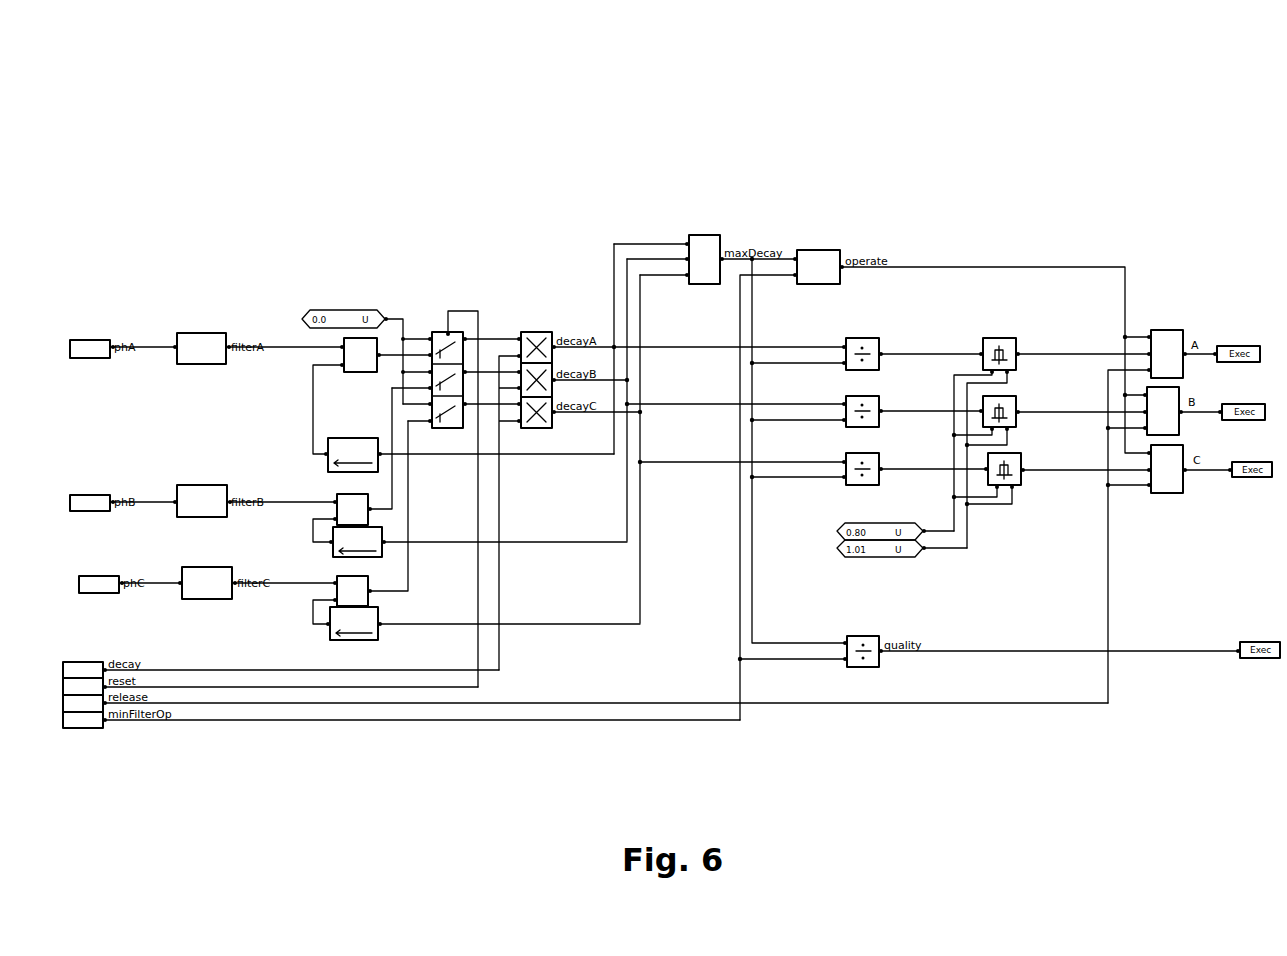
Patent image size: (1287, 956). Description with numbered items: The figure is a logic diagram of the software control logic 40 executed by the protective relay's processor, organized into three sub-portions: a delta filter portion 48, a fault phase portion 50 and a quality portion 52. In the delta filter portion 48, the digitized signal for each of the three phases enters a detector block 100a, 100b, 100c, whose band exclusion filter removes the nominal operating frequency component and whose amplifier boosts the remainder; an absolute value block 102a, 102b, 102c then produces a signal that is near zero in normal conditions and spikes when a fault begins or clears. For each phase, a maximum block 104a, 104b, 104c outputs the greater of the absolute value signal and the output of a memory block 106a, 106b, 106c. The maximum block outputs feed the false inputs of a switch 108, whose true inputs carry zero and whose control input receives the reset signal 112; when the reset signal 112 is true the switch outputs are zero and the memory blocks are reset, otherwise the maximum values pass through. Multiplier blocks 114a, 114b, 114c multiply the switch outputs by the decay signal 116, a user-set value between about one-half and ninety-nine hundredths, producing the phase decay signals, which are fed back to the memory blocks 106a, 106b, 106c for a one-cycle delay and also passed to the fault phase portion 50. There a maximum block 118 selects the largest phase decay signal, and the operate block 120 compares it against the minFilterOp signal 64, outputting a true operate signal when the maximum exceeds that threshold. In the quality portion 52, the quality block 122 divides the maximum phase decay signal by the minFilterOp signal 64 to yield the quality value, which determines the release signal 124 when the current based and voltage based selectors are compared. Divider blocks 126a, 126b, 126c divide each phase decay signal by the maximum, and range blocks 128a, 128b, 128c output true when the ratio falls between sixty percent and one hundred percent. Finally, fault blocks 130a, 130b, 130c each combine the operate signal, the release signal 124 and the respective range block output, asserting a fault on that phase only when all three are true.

The control logic 40 is at (604, 110).
The delta filter portion 48 is at (285, 252).
The fault phase portion 50 is at (918, 245).
The quality portion 52 is at (857, 705).
The minFilterOp signal 64 is at (82, 730).
The detector block 100a is at (82, 340).
The detector block 100b is at (82, 495).
The detector block 100c is at (88, 576).
The absolute value block 102a is at (195, 333).
The absolute value block 102b is at (195, 485).
The absolute value block 102c is at (200, 567).
The maximum block 104a is at (362, 338).
The maximum block 104b is at (340, 494).
The maximum block 104c is at (340, 576).
The memory block 106a is at (350, 438).
The memory block 106b is at (385, 530).
The memory block 106c is at (382, 612).
The switch 108 is at (440, 330).
The reset signal 112 is at (68, 662).
The multiplier block 114a is at (527, 332).
The multiplier block 114b is at (553, 378).
The multiplier block 114c is at (545, 430).
The decay signal 116 is at (97, 665).
The maximum block 118 is at (703, 235).
The operate block 120 is at (822, 250).
The quality block 122 is at (870, 636).
The release signal 124 is at (113, 728).
The divider block 126a is at (865, 338).
The divider block 126b is at (865, 396).
The divider block 126c is at (865, 453).
The range block 128a is at (1000, 338).
The range block 128b is at (1016, 404).
The range block 128c is at (1021, 462).
The fault block 130a is at (1167, 330).
The fault block 130b is at (1179, 395).
The fault block 130c is at (1183, 493).